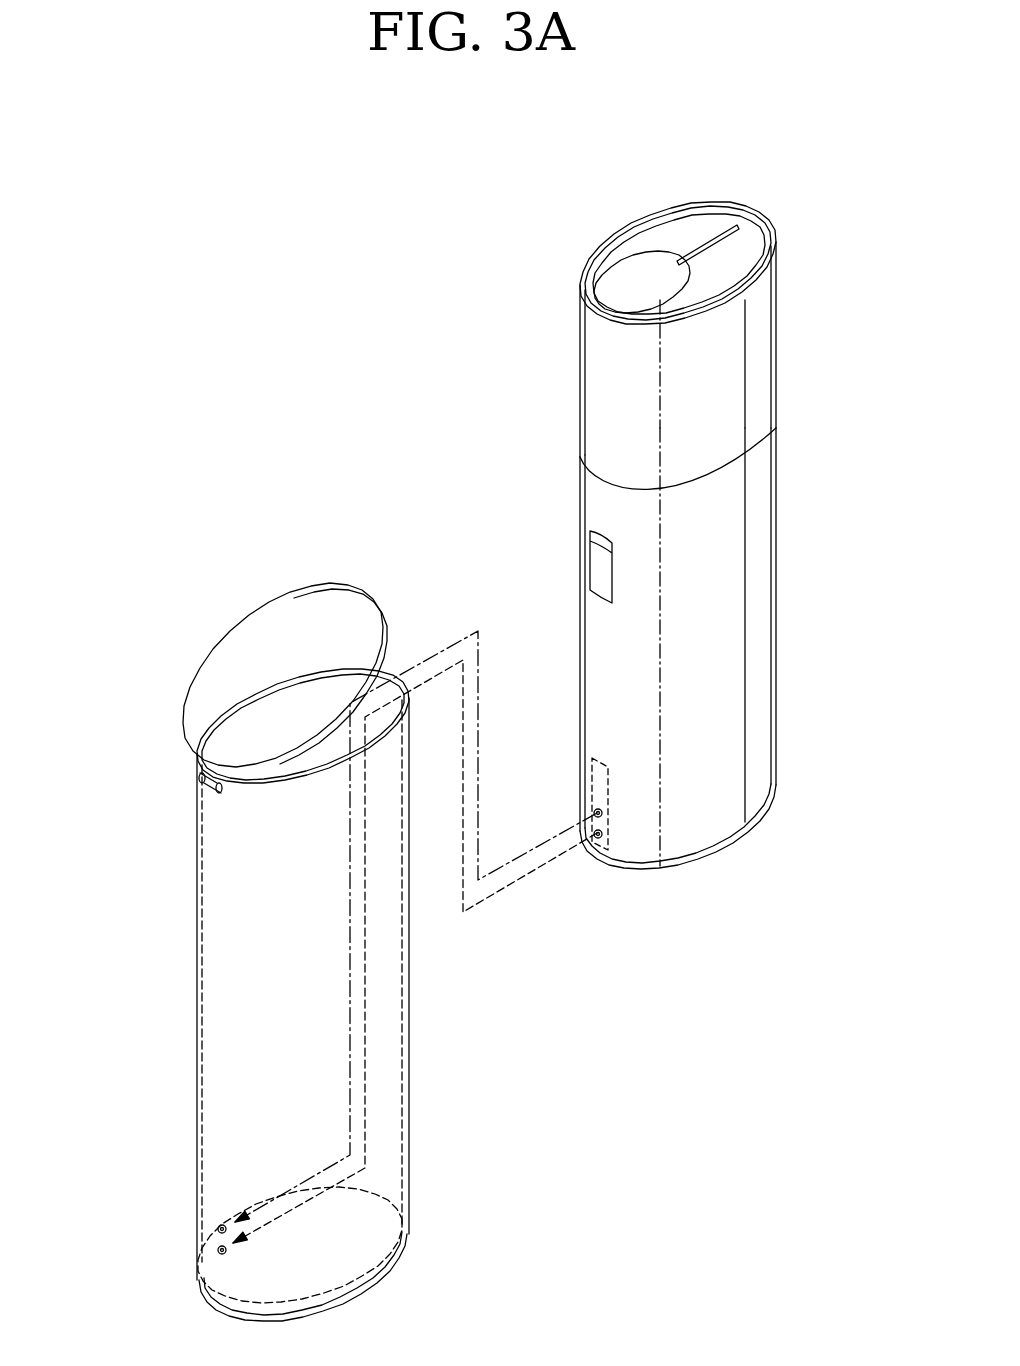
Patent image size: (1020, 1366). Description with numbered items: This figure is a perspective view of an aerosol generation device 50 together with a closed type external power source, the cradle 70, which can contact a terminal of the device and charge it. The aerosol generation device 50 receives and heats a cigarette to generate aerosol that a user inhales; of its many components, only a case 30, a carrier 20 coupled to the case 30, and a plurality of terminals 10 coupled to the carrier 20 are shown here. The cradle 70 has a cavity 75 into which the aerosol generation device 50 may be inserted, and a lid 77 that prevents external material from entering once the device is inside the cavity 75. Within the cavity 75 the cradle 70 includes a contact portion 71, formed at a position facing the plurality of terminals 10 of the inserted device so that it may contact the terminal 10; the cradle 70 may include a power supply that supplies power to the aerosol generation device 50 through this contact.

The terminals 10 is at (597, 840).
The carrier 20 is at (592, 770).
The case 30 is at (790, 530).
The aerosol generation device 50 is at (793, 297).
The cradle 70 is at (183, 1088).
The contact portion 71 is at (218, 1228).
The cavity 75 is at (290, 952).
The lid 77 is at (265, 637).